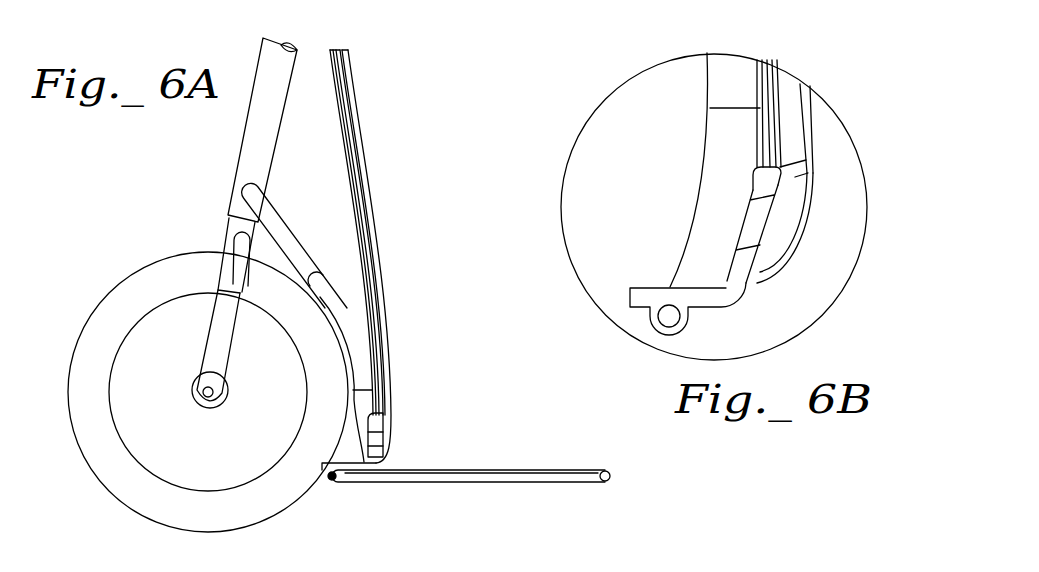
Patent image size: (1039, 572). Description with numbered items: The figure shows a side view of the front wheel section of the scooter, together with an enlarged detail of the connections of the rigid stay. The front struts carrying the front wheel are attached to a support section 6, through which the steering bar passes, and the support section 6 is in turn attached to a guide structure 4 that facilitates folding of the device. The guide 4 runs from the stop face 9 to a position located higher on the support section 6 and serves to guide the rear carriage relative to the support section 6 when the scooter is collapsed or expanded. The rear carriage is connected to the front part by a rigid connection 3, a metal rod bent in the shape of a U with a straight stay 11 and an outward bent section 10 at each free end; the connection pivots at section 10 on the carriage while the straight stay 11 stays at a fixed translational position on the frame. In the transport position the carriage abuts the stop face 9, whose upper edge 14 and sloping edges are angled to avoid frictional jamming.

In FIG. 6A, the support section 6 is at (240, 160).
In FIG. 6A, the guide structure 4 is at (388, 323).
In FIG. 6A, the stop face 9 is at (378, 433).
In FIG. 6A, the rigid connection 3 is at (460, 471).
In FIG. 6A, the outward bent section 10 is at (606, 471).
In FIG. 6A, the straight stay 11 is at (352, 496).
In FIG. 6B, the upper edge 14 is at (771, 169).